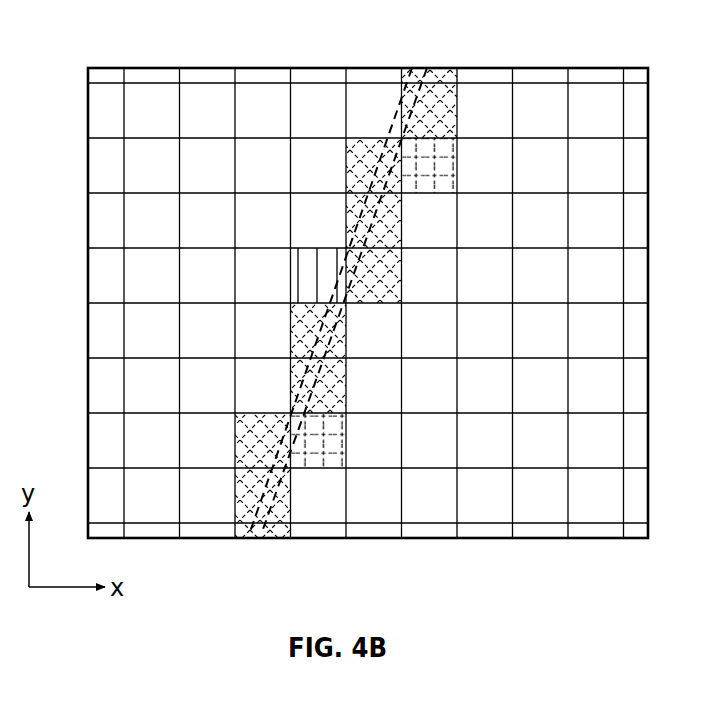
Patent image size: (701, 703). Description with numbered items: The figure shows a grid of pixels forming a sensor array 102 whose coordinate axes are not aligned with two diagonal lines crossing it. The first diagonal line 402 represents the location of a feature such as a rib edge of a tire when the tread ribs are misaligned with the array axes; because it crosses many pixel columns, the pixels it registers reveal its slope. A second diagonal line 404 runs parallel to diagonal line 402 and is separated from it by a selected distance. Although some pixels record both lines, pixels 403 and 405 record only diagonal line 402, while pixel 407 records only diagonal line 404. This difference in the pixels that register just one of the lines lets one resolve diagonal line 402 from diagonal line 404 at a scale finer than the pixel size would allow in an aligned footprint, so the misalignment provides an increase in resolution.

The sensor array 102 is at (146, 66).
The diagonal line 402 is at (416, 105).
The pixel 403 is at (449, 156).
The diagonal line 404 is at (420, 70).
The pixel 405 is at (338, 426).
The pixel 407 is at (302, 275).